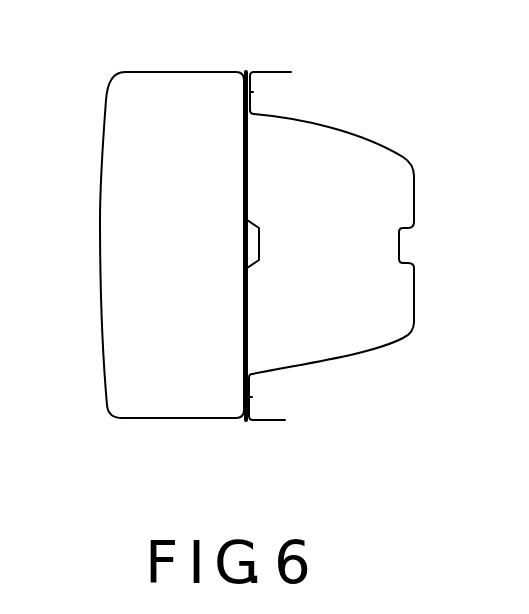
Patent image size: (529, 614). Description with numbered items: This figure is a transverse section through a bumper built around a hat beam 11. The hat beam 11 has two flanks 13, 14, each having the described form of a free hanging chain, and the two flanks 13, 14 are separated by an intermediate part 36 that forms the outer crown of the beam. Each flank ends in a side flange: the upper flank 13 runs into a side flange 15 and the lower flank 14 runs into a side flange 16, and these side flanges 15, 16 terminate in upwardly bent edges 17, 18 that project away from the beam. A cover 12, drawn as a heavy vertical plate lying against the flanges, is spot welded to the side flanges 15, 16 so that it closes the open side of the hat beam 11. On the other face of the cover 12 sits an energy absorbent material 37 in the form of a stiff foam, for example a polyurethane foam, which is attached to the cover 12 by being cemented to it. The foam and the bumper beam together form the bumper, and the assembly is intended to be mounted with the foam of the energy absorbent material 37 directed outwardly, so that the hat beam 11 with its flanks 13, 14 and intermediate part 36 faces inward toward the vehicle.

The hat beam 11 is at (427, 320).
The cover 12 is at (244, 128).
The flank 13 is at (357, 137).
The flank 14 is at (368, 353).
The side flange 15 is at (251, 92).
The side flange 16 is at (248, 398).
The upwardly bent edge 17 is at (273, 71).
The upwardly bent edge 18 is at (270, 421).
The intermediate part 36 is at (399, 240).
The energy absorbent material 37 is at (102, 240).